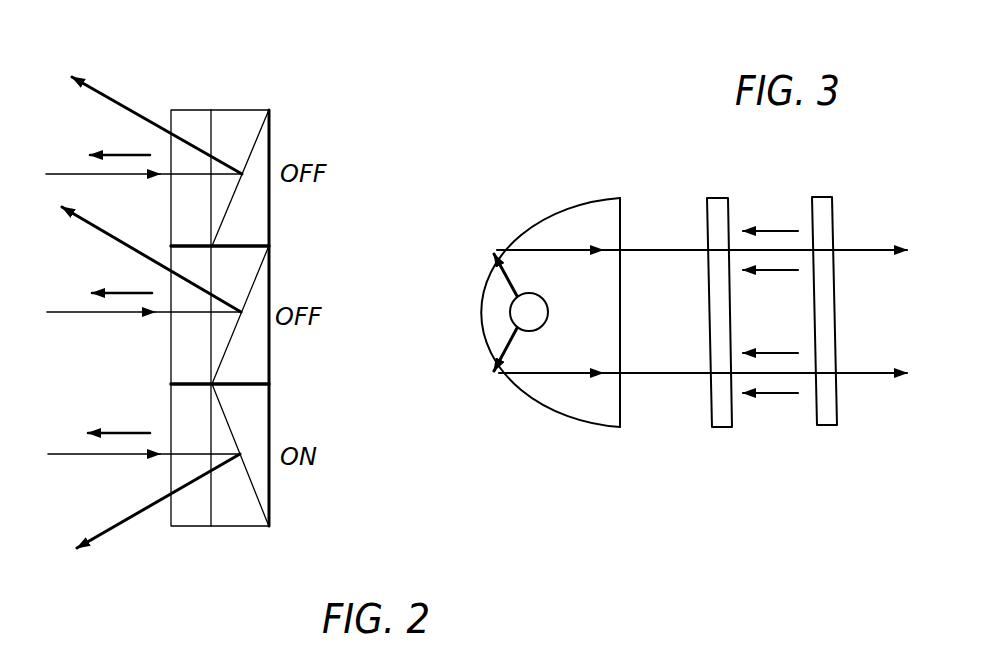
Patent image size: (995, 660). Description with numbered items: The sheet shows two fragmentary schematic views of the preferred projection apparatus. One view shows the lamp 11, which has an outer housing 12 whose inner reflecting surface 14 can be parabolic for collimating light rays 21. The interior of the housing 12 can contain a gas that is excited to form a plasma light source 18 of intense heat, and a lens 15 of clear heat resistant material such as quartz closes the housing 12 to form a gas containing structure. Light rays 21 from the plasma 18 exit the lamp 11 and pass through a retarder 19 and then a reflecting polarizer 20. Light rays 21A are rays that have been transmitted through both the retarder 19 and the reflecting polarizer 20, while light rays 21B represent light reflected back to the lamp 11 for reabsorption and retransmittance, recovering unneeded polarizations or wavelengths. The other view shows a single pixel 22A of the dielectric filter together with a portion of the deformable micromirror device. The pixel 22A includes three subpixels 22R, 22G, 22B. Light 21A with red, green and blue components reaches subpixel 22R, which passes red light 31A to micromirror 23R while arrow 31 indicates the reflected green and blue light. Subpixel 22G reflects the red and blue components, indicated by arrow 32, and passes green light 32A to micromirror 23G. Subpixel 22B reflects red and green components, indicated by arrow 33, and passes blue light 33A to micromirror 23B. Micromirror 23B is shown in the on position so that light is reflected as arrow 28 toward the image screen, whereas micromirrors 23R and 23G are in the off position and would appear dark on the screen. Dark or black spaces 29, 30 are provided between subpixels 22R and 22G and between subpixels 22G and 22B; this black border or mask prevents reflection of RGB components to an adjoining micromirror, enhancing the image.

In FIG. 3, the lamp 11 is at (580, 319).
In FIG. 3, the outer housing 12 is at (523, 223).
In FIG. 3, the inner reflecting surface 14 is at (474, 322).
In FIG. 3, the lens 15 is at (623, 290).
In FIG. 3, the plasma light source 18 is at (549, 312).
In FIG. 3, the retarder 19 is at (718, 197).
In FIG. 3, the reflecting polarizer 20 is at (828, 427).
In FIG. 3, the light rays 21 is at (577, 248).
In FIG. 2, the transmitted light rays 21A is at (97, 177).
In FIG. 3, the transmitted light rays 21A is at (872, 247).
In FIG. 3, the reflected light rays 21B is at (768, 230).
In FIG. 2, the pixel 22A is at (190, 108).
In FIG. 2, the red subpixel 22R is at (177, 201).
In FIG. 2, the green subpixel 22G is at (177, 342).
In FIG. 2, the blue subpixel 22B is at (177, 470).
In FIG. 2, the red micromirror 23R is at (253, 148).
In FIG. 2, the green micromirror 23G is at (245, 301).
In FIG. 2, the blue micromirror 23B is at (233, 450).
In FIG. 2, the reflected light arrow 28 is at (103, 530).
In FIG. 2, the black space 29 is at (270, 243).
In FIG. 2, the black space 30 is at (272, 385).
In FIG. 2, the reflected green and blue light arrow 31 is at (97, 163).
In FIG. 2, the red light 31A is at (224, 162).
In FIG. 2, the reflected red and blue light arrow 32 is at (123, 297).
In FIG. 2, the green light 32A is at (248, 298).
In FIG. 2, the reflected red and green light arrow 33 is at (115, 427).
In FIG. 2, the blue light 33A is at (222, 470).